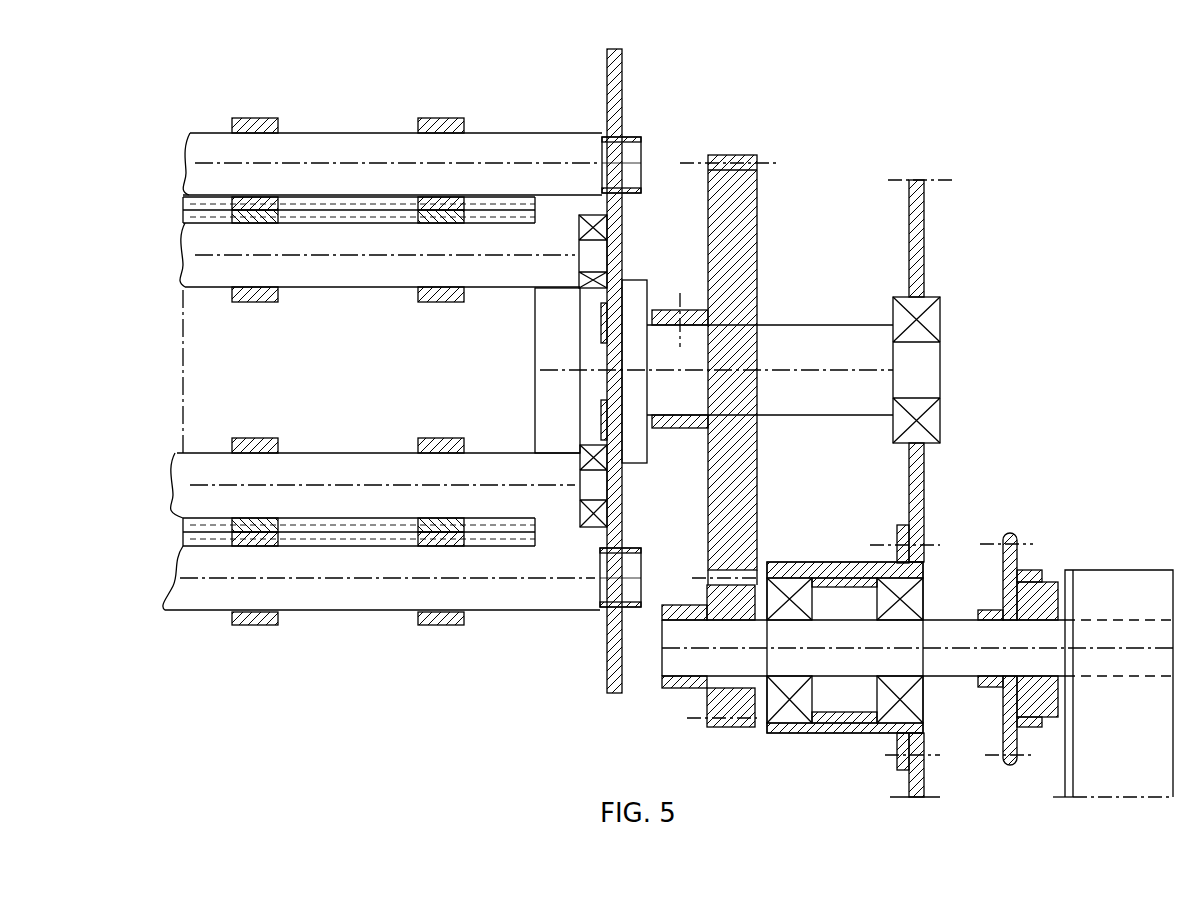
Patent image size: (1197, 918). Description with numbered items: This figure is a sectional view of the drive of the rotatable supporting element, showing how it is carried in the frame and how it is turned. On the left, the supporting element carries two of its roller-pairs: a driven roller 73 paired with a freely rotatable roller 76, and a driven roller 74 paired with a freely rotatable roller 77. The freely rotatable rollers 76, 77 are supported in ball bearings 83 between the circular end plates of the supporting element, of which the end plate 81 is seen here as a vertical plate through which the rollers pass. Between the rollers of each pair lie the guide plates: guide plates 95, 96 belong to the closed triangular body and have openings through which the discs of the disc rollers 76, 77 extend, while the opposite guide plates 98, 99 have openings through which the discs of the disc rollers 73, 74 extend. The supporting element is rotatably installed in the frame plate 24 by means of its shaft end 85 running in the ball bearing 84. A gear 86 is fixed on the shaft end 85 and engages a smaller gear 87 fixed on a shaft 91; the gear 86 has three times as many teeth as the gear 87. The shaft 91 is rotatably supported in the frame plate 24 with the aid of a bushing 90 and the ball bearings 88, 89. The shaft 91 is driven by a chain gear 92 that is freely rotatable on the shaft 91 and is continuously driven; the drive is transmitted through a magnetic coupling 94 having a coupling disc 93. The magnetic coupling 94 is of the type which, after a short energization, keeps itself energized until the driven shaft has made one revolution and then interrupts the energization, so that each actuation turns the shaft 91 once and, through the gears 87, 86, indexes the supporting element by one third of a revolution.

The frame plate 24 is at (922, 212).
The roller 73 is at (347, 133).
The roller 74 is at (357, 612).
The freely rotatable roller 76 is at (347, 289).
The freely rotatable roller 77 is at (336, 453).
The circular end plate 81 is at (622, 100).
The ball bearing 83 is at (588, 298).
The ball bearing 84 is at (935, 318).
The shaft end 85 is at (797, 333).
The gear 86 is at (757, 222).
The gear 87 is at (707, 698).
The ball bearing 88 is at (792, 715).
The ball bearing 89 is at (922, 697).
The bushing 90 is at (818, 562).
The shaft 91 is at (940, 622).
The chain gear 92 is at (1017, 562).
The coupling disc 93 is at (1048, 720).
The magnetic coupling 94 is at (1112, 578).
The guide plate 95 is at (183, 220).
The guide plate 96 is at (183, 521).
The guide plate 98 is at (183, 200).
The guide plate 99 is at (183, 542).